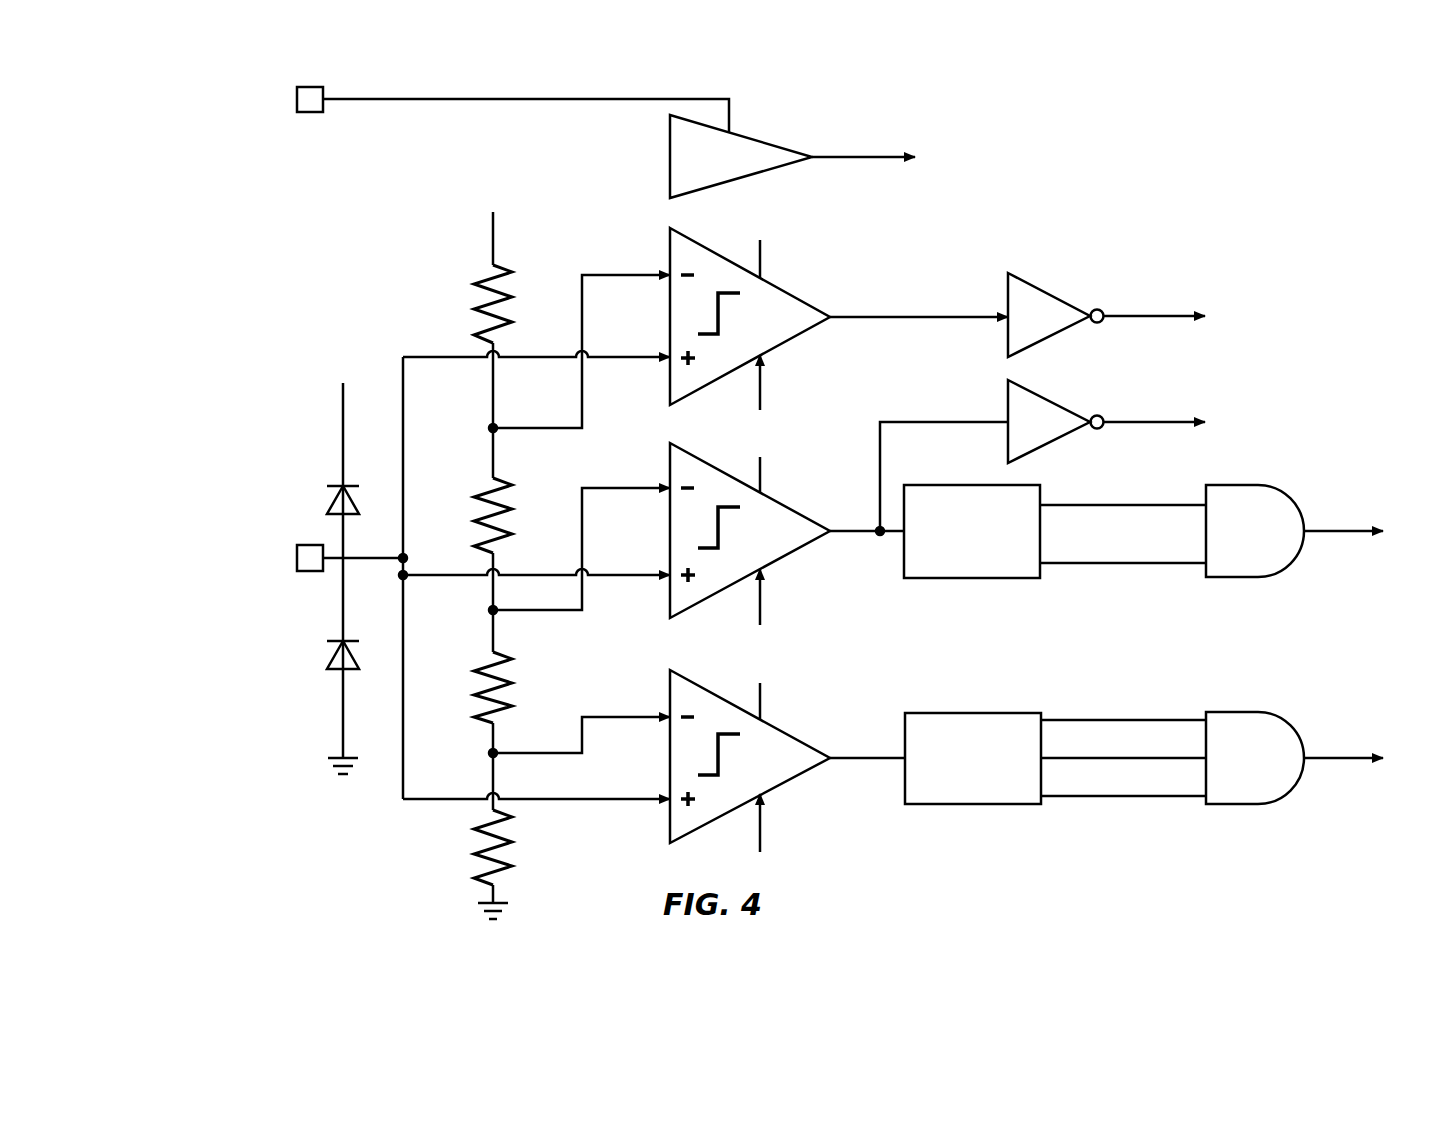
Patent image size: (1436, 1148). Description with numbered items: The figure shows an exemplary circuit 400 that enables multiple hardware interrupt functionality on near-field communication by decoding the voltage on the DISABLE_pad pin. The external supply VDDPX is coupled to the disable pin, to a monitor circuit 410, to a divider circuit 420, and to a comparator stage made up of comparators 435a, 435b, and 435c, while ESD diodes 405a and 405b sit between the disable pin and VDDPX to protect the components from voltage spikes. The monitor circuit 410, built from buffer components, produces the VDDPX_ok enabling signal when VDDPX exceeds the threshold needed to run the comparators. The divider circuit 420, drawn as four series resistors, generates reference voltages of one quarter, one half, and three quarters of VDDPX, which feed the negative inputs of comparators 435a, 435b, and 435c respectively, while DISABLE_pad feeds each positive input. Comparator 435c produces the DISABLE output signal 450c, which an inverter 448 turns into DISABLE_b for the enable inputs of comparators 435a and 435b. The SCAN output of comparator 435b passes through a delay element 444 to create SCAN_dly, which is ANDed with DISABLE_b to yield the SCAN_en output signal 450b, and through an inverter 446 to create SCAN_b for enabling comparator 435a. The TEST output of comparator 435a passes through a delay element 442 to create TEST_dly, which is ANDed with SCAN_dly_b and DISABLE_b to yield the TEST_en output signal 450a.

The circuit 400 is at (1247, 235).
The ESD diode 405a is at (340, 638).
The ESD diode 405b is at (340, 483).
The monitor circuit 410 is at (763, 142).
The divider circuit 420 is at (483, 278).
The comparator 435a is at (795, 737).
The comparator 435b is at (795, 511).
The comparator 435c is at (795, 297).
The delay element 442 is at (970, 712).
The delay element 444 is at (972, 580).
The inverter 446 is at (1037, 396).
The inverter 448 is at (1037, 289).
The TEST_en output signal 450a is at (1335, 754).
The SCAN_en output signal 450b is at (1335, 529).
The DISABLE output signal 450c is at (913, 283).